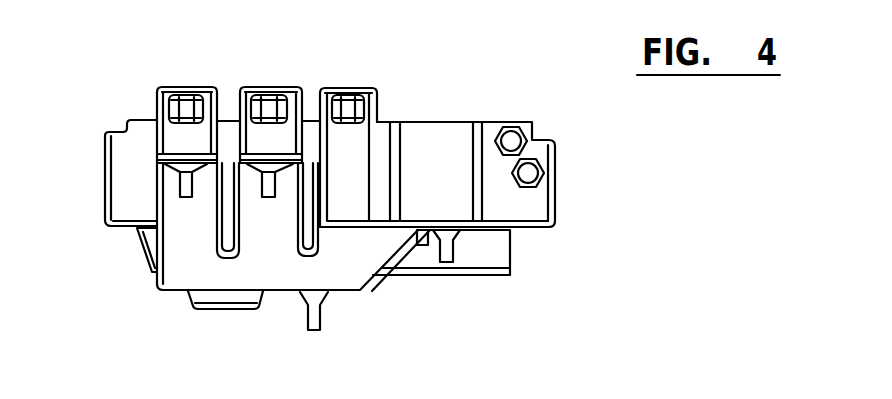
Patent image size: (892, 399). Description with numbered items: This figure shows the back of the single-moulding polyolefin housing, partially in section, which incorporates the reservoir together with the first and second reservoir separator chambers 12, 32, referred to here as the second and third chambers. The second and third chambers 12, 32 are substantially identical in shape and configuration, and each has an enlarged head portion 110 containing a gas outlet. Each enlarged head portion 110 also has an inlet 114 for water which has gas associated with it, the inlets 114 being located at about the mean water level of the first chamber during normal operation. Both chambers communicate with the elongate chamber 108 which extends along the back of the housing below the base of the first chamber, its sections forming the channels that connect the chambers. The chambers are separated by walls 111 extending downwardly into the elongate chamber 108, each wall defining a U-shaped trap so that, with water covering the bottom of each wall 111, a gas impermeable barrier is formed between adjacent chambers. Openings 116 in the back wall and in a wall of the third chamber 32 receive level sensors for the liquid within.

The first reservoir separator chamber 12 is at (300, 133).
The second reservoir separator chamber 32 is at (179, 138).
The enlarged head portion 110 is at (267, 88).
The inlet 114 is at (268, 191).
The walls 111 is at (298, 258).
The openings 116 is at (513, 144).
The elongate chamber 108 is at (347, 268).